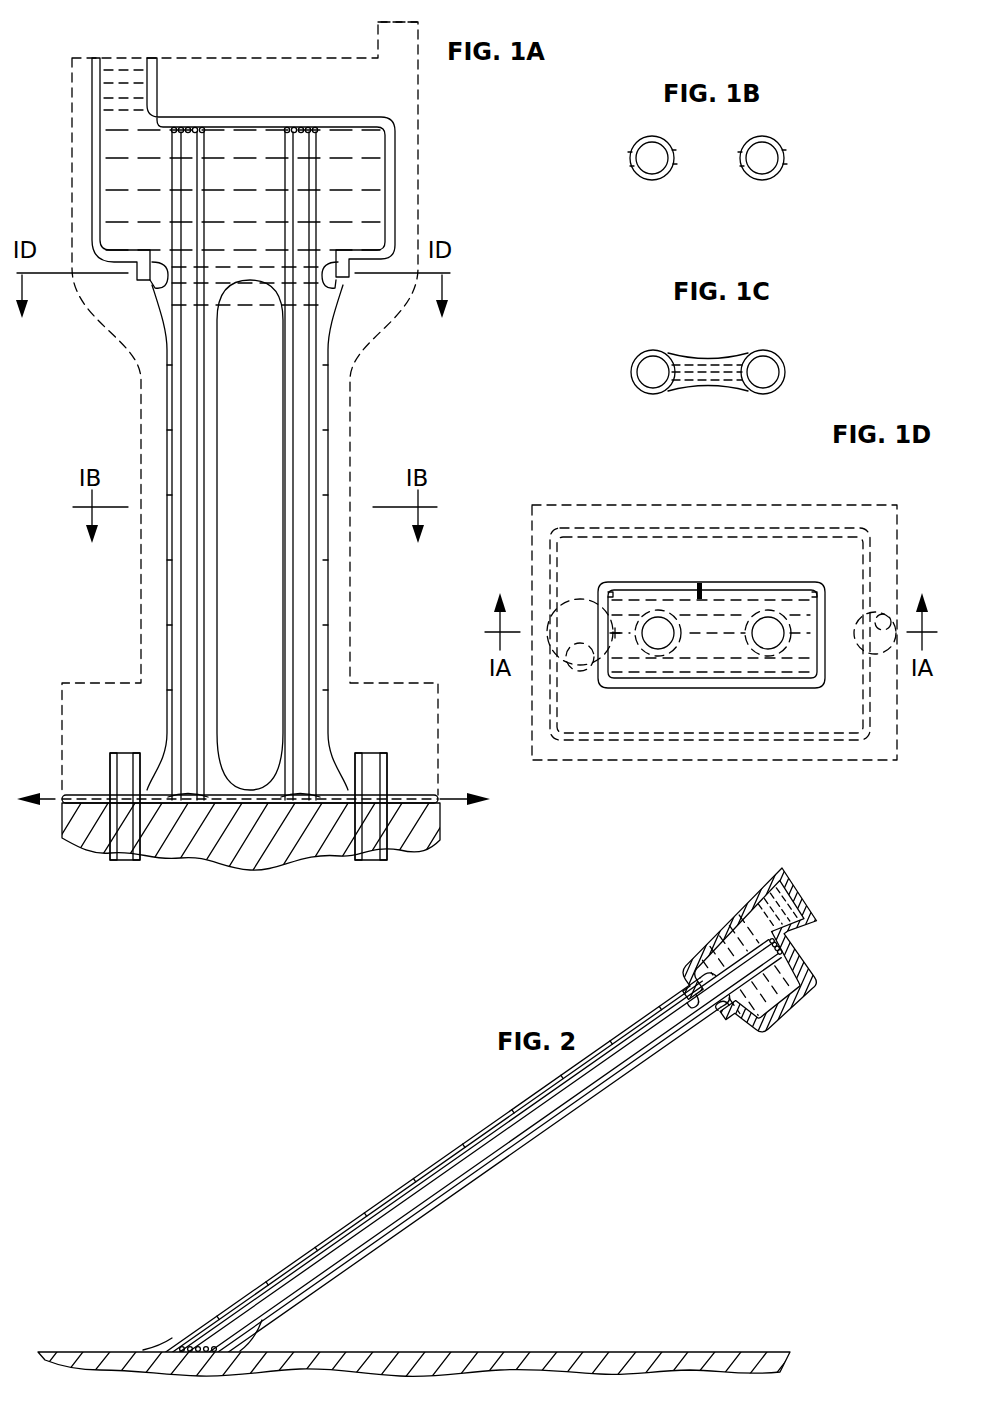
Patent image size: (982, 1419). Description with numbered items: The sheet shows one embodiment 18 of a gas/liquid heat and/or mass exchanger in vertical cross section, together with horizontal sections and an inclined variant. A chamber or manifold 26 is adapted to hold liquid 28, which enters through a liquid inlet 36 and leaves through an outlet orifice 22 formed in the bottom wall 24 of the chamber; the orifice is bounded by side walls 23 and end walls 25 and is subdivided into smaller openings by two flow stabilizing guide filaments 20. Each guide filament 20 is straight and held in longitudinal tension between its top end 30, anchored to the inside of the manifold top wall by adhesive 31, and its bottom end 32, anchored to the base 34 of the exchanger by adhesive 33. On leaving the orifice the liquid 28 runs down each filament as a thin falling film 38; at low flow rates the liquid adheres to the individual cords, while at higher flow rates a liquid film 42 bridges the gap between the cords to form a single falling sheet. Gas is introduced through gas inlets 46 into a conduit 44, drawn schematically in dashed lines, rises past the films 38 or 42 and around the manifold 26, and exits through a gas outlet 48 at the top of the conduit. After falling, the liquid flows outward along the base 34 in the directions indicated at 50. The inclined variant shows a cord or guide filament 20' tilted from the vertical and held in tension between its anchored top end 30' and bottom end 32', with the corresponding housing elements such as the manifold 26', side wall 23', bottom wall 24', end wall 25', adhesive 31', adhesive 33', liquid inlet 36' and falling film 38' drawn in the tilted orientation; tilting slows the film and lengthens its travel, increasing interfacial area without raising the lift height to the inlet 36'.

In FIG. 1A, the gas/liquid heat and/or mass exchanger embodiment 18 is at (108, 394).
In FIG. 1A, the flow stabilizing guide filament 20 is at (235, 414).
In FIG. 1B, the flow stabilizing guide filament 20 is at (707, 178).
In FIG. 1C, the flow stabilizing guide filament 20 is at (708, 352).
In FIG. 1D, the flow stabilizing guide filament 20 is at (736, 704).
In FIG. 1A, the outlet orifice 22 is at (290, 285).
In FIG. 1D, the outlet orifice 22 is at (700, 584).
In FIG. 1A, the side wall 23 is at (138, 354).
In FIG. 1D, the side wall 23 is at (729, 729).
In FIG. 1A, the bottom wall 24 is at (438, 231).
In FIG. 1D, the bottom wall 24 is at (789, 497).
In FIG. 1A, the end wall 25 is at (230, 298).
In FIG. 1D, the end wall 25 is at (717, 537).
In FIG. 1A, the chamber or manifold 26 is at (278, 169).
In FIG. 1D, the chamber or manifold 26 is at (717, 630).
In FIG. 1A, the liquid 28 is at (226, 219).
In FIG. 1D, the liquid 28 is at (726, 649).
In FIG. 2, the liquid 28 is at (745, 932).
In FIG. 1A, the top end 30 is at (231, 77).
In FIG. 1A, the adhesive 31 is at (325, 88).
In FIG. 1A, the bottom end 32 is at (243, 844).
In FIG. 1A, the adhesive 33 is at (236, 853).
In FIG. 1A, the base 34 is at (395, 795).
In FIG. 1A, the liquid inlet 36 is at (137, 67).
In FIG. 1D, the liquid inlet 36 is at (583, 695).
In FIG. 1A, the thin falling film 38 is at (262, 537).
In FIG. 1B, the thin falling film 38 is at (707, 145).
In FIG. 1D, the thin falling film 38 is at (720, 565).
In FIG. 1C, the liquid film 42 is at (710, 390).
In FIG. 1A, the conduit 44 is at (418, 122).
In FIG. 1D, the conduit 44 is at (892, 505).
In FIG. 1A, the gas inlet 46 is at (125, 857).
In FIG. 1A, the gas outlet 48 is at (418, 25).
In FIG. 1D, the gas outlet 48 is at (880, 625).
In FIG. 1A, the liquid outflow direction 50 is at (45, 795).
In FIG. 2, the cord or guide filament 20' is at (461, 1169).
In FIG. 2, the potting material 23' is at (701, 1036).
In FIG. 2, the notch 24' is at (764, 1043).
In FIG. 2, the seal 25' is at (651, 976).
In FIG. 2, the housing 26' is at (758, 972).
In FIG. 2, the top end 30' is at (833, 941).
In FIG. 2, the tube end flange 31' is at (849, 976).
In FIG. 2, the bottom end 32' is at (412, 1350).
In FIG. 2, the tube bottom flange 33' is at (189, 1310).
In FIG. 2, the liquid inlet 36' is at (822, 903).
In FIG. 2, the sheath 38' is at (428, 1190).